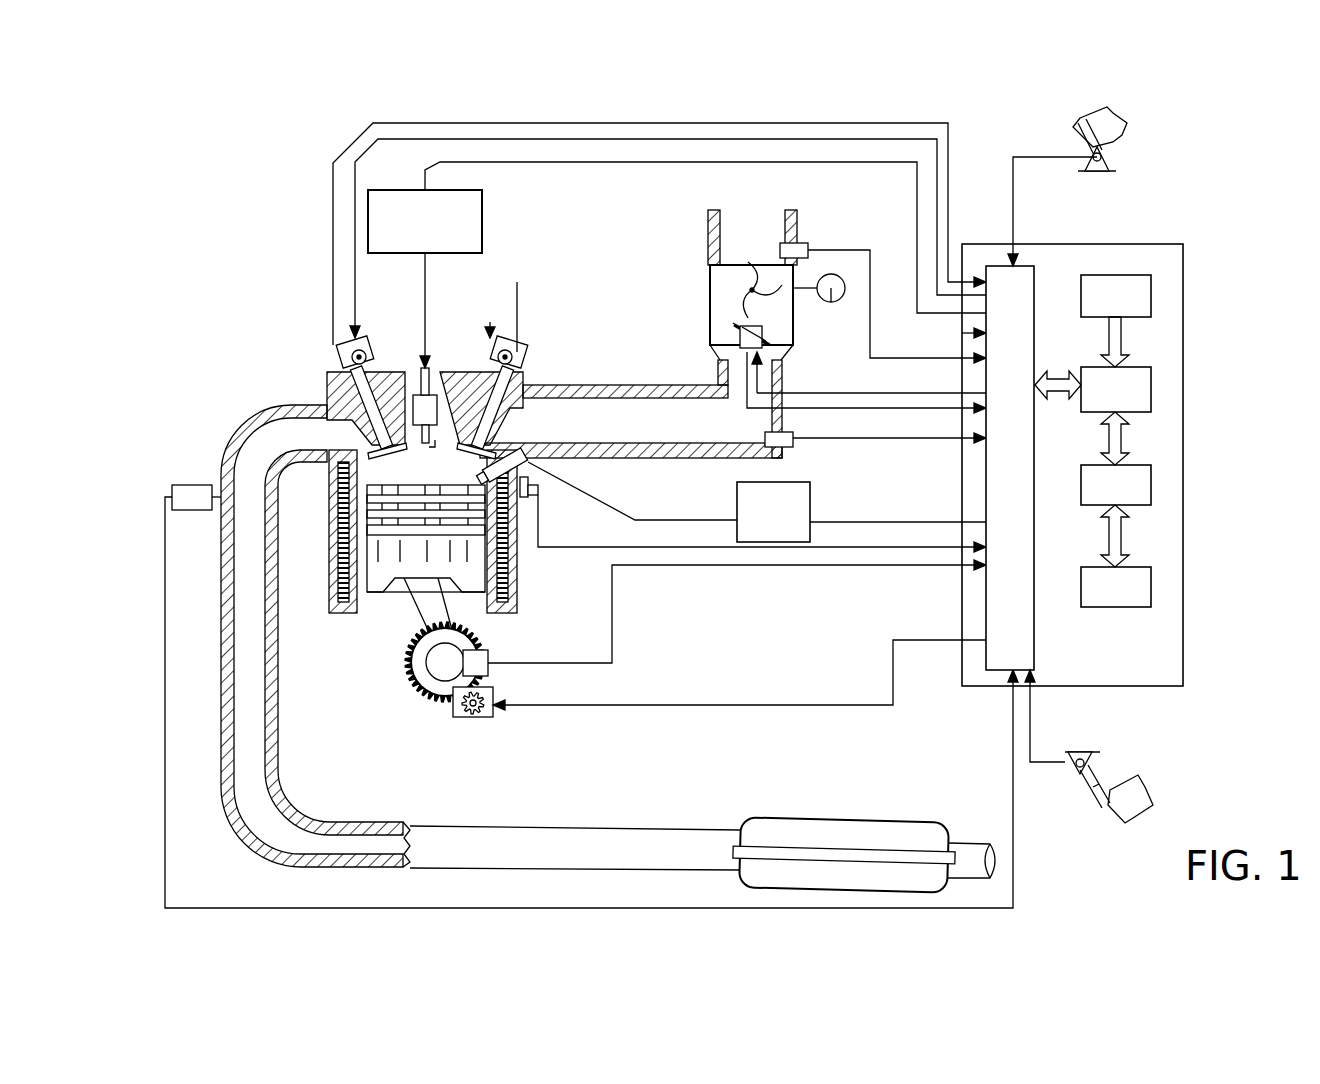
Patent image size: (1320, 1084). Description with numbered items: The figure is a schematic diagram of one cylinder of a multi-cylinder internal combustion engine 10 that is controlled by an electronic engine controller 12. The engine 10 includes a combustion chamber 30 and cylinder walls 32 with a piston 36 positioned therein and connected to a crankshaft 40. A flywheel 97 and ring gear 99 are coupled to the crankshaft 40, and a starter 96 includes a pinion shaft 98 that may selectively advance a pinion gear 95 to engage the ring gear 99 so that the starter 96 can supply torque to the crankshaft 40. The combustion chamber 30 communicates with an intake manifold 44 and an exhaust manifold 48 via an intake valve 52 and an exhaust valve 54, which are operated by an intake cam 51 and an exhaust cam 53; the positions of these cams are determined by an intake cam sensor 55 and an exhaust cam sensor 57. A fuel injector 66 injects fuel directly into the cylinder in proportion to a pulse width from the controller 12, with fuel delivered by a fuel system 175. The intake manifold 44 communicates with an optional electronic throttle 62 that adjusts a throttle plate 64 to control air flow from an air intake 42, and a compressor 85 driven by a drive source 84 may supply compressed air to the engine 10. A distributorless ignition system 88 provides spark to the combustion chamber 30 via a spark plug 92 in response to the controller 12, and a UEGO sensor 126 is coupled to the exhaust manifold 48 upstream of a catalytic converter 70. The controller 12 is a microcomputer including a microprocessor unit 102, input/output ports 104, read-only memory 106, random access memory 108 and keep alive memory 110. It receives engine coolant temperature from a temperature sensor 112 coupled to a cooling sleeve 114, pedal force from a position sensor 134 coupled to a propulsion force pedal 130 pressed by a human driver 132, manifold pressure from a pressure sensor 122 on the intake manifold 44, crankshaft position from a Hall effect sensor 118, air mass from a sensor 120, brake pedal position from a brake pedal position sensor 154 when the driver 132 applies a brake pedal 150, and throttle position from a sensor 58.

The internal combustion engine 10 is at (257, 320).
The electronic engine controller 12 is at (1183, 244).
The combustion chamber 30 is at (422, 465).
The cylinder walls 32 is at (365, 605).
The piston 36 is at (405, 563).
The crankshaft 40 is at (434, 692).
The air intake 42 is at (766, 252).
The intake manifold 44 is at (613, 432).
The exhaust manifold 48 is at (311, 444).
The intake cam 51 is at (483, 345).
The intake valve 52 is at (473, 435).
The exhaust cam 53 is at (364, 345).
The exhaust valve 54 is at (370, 447).
The intake cam sensor 55 is at (505, 352).
The exhaust cam sensor 57 is at (345, 358).
The throttle position sensor 58 is at (736, 350).
The electronic throttle 62 is at (764, 333).
The throttle plate 64 is at (735, 330).
The fuel injector 66 is at (527, 467).
The catalytic converter 70 is at (780, 820).
The drive source 84 is at (819, 304).
The compressor 85 is at (712, 287).
The distributorless ignition system 88 is at (388, 190).
The spark plug 92 is at (434, 374).
The pinion gear 95 is at (479, 716).
The starter 96 is at (480, 717).
The flywheel 97 is at (418, 665).
The pinion shaft 98 is at (468, 713).
The ring gear 99 is at (440, 703).
The microprocessor unit 102 is at (1150, 385).
The input/output ports 104 is at (1035, 277).
The read-only memory 106 is at (1150, 293).
The random access memory 108 is at (1150, 485).
The keep alive memory 110 is at (1150, 585).
The temperature sensor 112 is at (537, 497).
The cooling sleeve 114 is at (503, 568).
The Hall effect sensor 118 is at (489, 652).
The air mass sensor 120 is at (806, 243).
The pressure sensor 122 is at (793, 448).
The Universal Exhaust Gas Oxygen sensor 126 is at (172, 490).
The propulsion force pedal 130 is at (1080, 130).
The human driver 132 is at (1125, 121).
The position sensor 134 is at (1105, 160).
The brake pedal 150 is at (1102, 806).
The brake pedal position sensor 154 is at (1073, 762).
The fuel system 175 is at (791, 530).